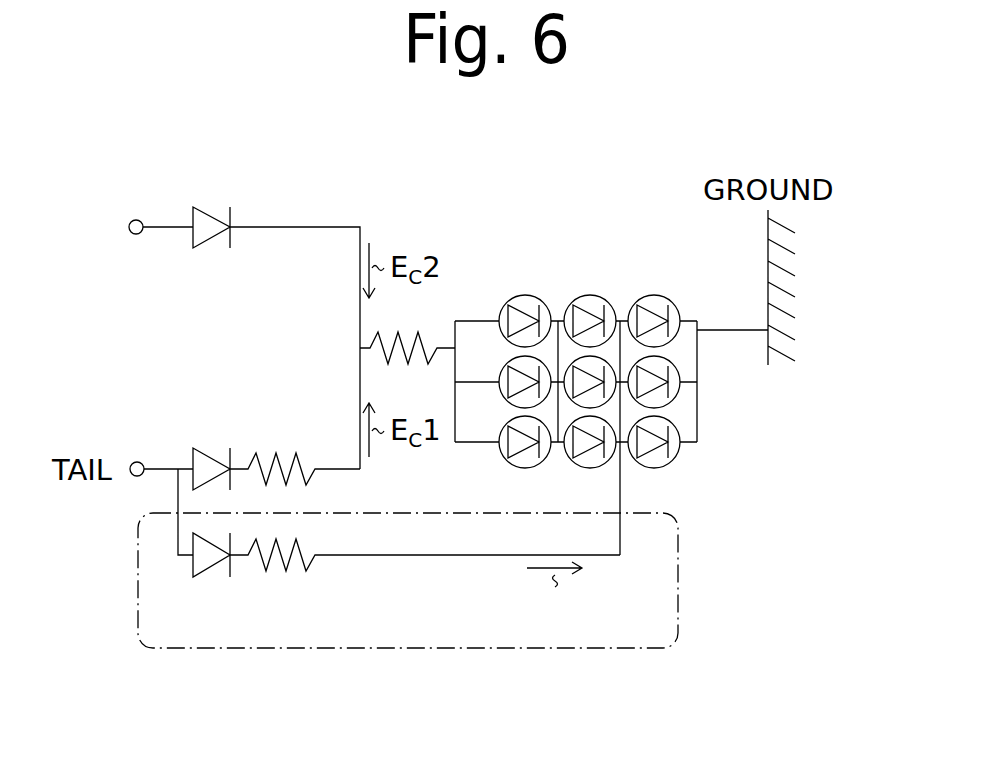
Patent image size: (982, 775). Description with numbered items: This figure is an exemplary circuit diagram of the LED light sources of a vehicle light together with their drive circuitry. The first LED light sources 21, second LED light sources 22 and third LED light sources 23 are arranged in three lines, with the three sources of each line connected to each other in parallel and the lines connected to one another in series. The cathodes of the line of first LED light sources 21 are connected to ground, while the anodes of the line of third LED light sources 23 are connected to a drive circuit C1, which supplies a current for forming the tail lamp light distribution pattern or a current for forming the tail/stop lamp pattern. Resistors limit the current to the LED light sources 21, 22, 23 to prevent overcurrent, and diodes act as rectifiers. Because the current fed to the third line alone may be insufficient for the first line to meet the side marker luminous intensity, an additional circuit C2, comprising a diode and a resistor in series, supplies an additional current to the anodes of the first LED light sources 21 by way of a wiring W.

The first LED light sources 21 is at (652, 296).
The second LED light sources 22 is at (589, 296).
The third LED light sources 23 is at (522, 296).
The drive circuit C1 is at (300, 203).
The additional circuit C2 is at (415, 672).
The wiring W is at (624, 491).